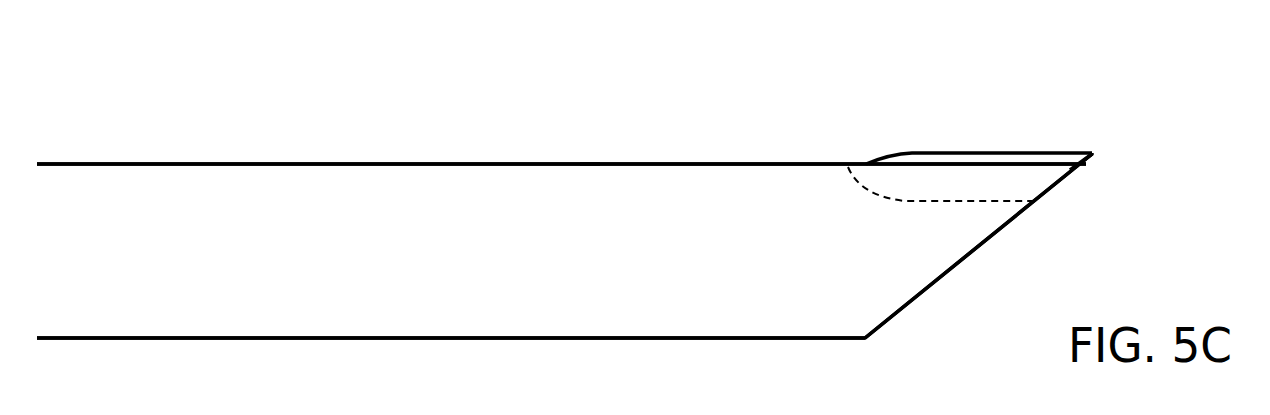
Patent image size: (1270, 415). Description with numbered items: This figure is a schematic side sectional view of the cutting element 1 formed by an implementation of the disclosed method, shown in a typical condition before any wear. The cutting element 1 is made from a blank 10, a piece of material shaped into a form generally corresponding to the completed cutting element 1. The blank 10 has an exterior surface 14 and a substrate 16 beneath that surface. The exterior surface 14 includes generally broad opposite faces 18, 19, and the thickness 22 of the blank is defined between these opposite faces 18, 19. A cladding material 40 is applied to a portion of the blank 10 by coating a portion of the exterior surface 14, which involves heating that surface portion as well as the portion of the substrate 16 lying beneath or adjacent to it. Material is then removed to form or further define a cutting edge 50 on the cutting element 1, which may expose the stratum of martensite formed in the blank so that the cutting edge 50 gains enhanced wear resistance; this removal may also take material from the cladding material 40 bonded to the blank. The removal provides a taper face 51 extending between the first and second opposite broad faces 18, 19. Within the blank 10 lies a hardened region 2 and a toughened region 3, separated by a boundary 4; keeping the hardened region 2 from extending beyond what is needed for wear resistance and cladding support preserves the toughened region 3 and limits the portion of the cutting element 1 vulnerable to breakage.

The cutting element 1 is at (436, 120).
The hardened region 2 is at (1030, 180).
The toughened region 3 is at (893, 277).
The boundary 4 is at (953, 201).
The blank 10 is at (772, 86).
The exterior surface 14 is at (592, 164).
The substrate 16 is at (803, 195).
The first opposite face 18 is at (183, 162).
The second opposite face 19 is at (220, 340).
The thickness 22 is at (95, 168).
The cladding material 40 is at (960, 152).
The cutting edge 50 is at (1088, 163).
The taper face 51 is at (925, 283).